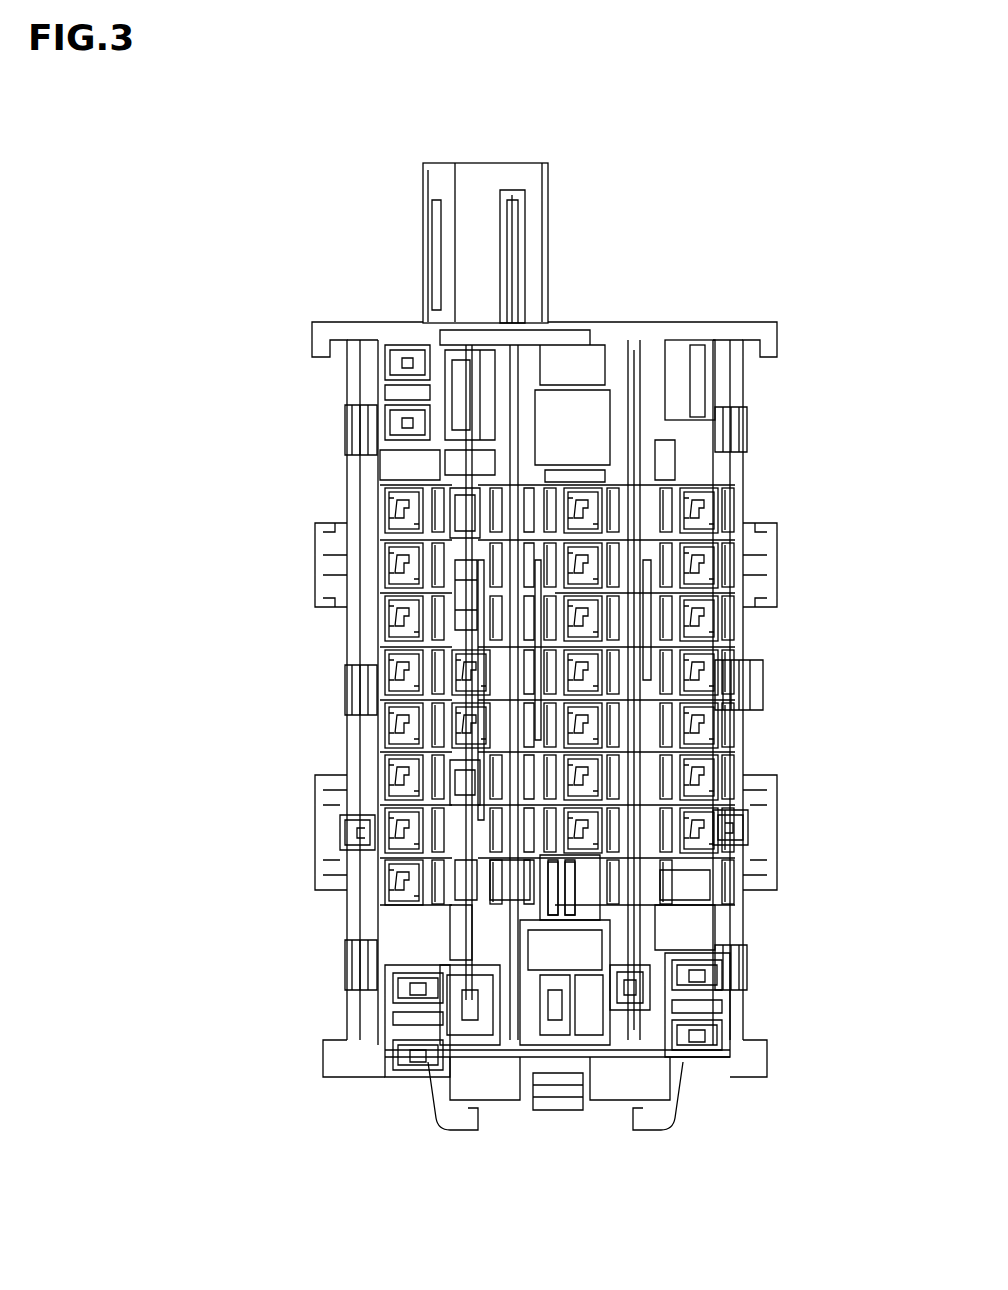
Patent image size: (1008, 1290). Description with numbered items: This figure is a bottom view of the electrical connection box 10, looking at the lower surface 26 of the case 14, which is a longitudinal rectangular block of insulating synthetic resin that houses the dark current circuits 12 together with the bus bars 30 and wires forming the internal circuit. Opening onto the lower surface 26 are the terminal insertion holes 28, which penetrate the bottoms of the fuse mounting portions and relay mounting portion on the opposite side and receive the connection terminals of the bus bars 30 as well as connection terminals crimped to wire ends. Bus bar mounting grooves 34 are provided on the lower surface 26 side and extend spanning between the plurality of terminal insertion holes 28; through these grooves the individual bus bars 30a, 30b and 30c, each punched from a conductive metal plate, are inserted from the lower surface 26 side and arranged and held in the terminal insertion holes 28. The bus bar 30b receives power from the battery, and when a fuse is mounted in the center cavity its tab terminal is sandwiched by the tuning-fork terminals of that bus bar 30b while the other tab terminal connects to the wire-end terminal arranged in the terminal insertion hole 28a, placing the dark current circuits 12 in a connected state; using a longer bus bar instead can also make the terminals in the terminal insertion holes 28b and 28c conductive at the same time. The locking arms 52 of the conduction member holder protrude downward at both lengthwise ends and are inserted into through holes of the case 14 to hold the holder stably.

The electrical connection box 10 is at (592, 112).
The dark current circuits 12 is at (546, 878).
The case 14 is at (631, 162).
The lower surface 26 is at (675, 412).
The terminal insertion holes 28 is at (405, 622).
The terminal insertion hole 28a is at (597, 842).
The terminal insertion hole 28b is at (703, 838).
The terminal insertion hole 28c is at (400, 838).
The bus bars 30 is at (845, 652).
The bus bar 30a is at (490, 816).
The bus bar 30b is at (545, 732).
The bus bar 30c is at (655, 674).
The bus bar mounting grooves 34 is at (470, 505).
The locking arms 52 is at (344, 830).